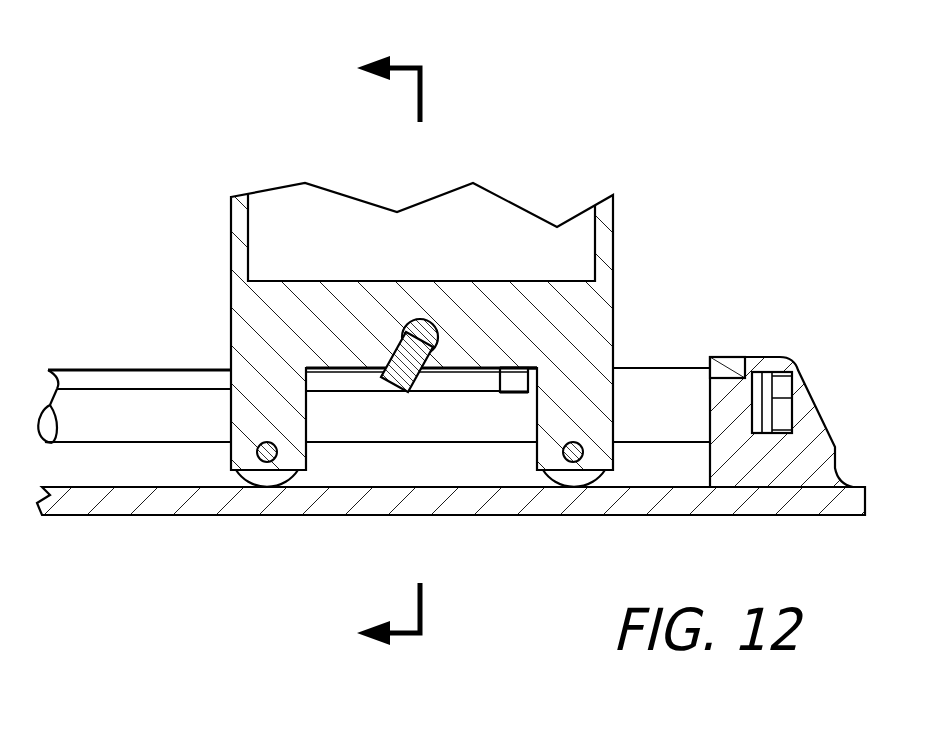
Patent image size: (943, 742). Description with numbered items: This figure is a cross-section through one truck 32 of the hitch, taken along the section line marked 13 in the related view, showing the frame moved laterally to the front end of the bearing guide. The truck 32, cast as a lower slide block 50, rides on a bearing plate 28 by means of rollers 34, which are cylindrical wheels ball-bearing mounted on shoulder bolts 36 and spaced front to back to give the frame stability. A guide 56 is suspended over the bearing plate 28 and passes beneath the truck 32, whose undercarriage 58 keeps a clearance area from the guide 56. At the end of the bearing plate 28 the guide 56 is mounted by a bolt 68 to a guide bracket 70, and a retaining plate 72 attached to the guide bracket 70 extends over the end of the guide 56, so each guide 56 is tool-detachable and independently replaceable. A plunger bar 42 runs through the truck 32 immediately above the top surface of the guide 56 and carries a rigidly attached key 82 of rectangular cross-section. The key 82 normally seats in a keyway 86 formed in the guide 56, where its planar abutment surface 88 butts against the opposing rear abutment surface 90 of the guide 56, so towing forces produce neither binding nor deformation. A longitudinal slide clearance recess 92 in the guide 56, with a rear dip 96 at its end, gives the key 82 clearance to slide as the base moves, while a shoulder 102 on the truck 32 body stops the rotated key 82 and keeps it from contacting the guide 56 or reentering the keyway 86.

The section line 13- 13 is at (384, 348).
The bearing plate 28 is at (297, 572).
The truck 32 is at (406, 372).
The roller 34 is at (210, 528).
The shoulder bolt 36 is at (307, 520).
The plunger bar 42 is at (418, 322).
The lower slide block 50 is at (231, 332).
The guide 56 is at (134, 432).
The undercarriage 58 is at (362, 555).
The bolt 68 is at (835, 447).
The guide bracket 70 is at (800, 382).
The retaining plate 72 is at (725, 357).
The key 82 is at (403, 528).
The keyway 86 is at (517, 368).
The planar abutment surface 88 is at (460, 348).
The rear abutment surface 90 is at (513, 372).
The slide clearance recess 92 is at (374, 391).
The rear dip 96 is at (486, 572).
The shoulder 102 is at (533, 170).